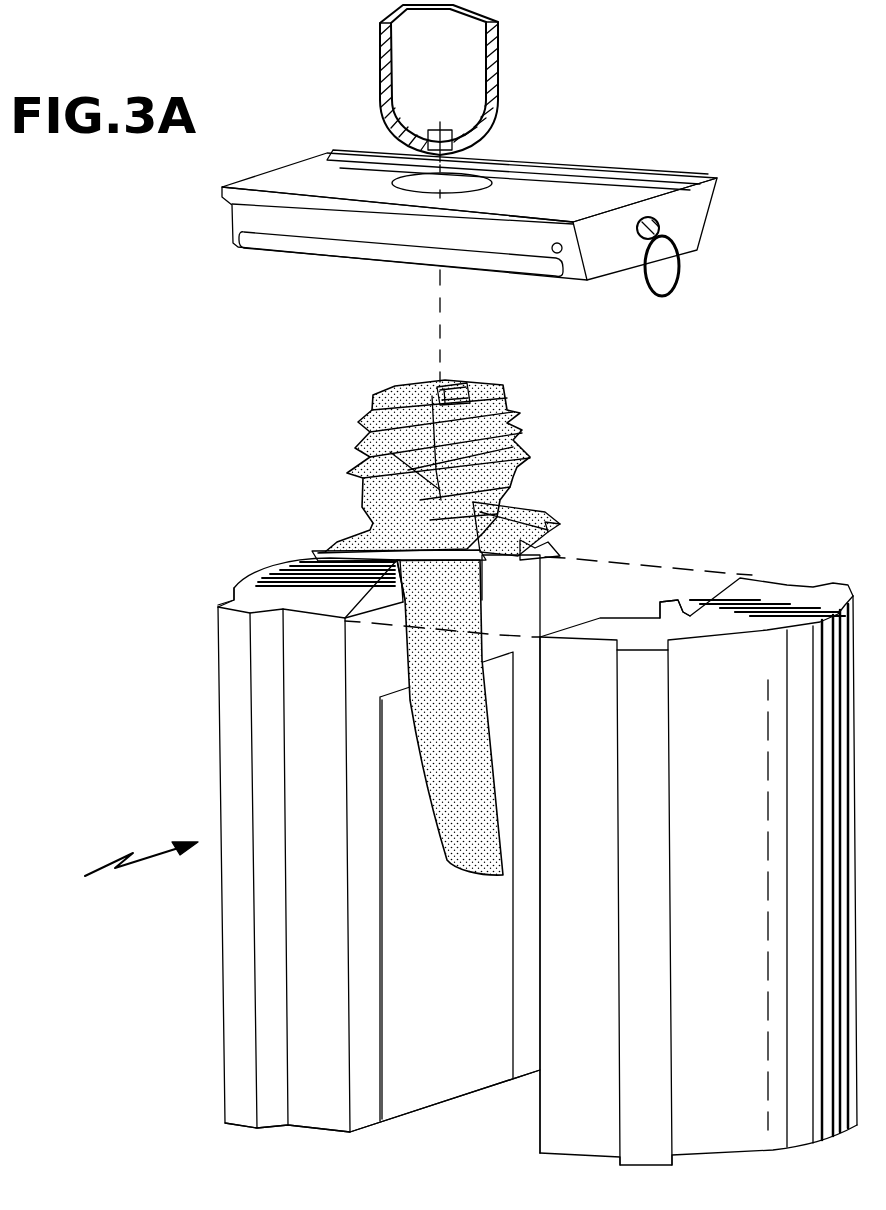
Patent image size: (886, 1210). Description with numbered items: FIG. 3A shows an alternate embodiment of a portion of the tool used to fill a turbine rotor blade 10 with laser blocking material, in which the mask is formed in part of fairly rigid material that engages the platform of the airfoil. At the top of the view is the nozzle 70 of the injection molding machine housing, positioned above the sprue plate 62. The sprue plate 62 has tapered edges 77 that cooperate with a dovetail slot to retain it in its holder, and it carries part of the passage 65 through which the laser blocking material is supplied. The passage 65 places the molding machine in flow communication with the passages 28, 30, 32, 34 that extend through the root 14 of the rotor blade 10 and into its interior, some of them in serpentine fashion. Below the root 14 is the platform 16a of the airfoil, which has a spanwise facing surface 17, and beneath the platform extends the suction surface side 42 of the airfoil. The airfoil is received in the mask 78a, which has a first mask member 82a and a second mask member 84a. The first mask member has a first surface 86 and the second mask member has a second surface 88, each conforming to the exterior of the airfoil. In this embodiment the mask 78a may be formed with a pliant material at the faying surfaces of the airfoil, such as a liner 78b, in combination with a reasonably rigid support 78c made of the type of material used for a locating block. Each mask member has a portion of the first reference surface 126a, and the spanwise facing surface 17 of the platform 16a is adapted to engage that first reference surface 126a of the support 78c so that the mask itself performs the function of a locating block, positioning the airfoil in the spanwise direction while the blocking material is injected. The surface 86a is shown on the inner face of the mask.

The nozzle 70 is at (498, 67).
The sprue plate 62 is at (692, 215).
The passage 65 is at (477, 186).
The tapered edges 77 is at (252, 248).
The rotor blade 10 is at (353, 461).
The root 14 is at (522, 444).
The passage 28 is at (437, 385).
The passage 30 is at (453, 388).
The passage 32 is at (455, 399).
The passage 34 is at (444, 396).
The platform 16a is at (552, 515).
The spanwise facing surface 17 is at (545, 546).
The mask 78a is at (109, 878).
The liner 78b is at (496, 961).
The support 78c is at (540, 1100).
The second mask member 84a is at (340, 724).
The first mask member 82a is at (606, 756).
The first surface 86 is at (715, 582).
The block inner face 86a is at (442, 854).
The second surface 88 is at (427, 847).
The suction surface side 42 is at (470, 690).
The first reference surface 126a is at (448, 615).